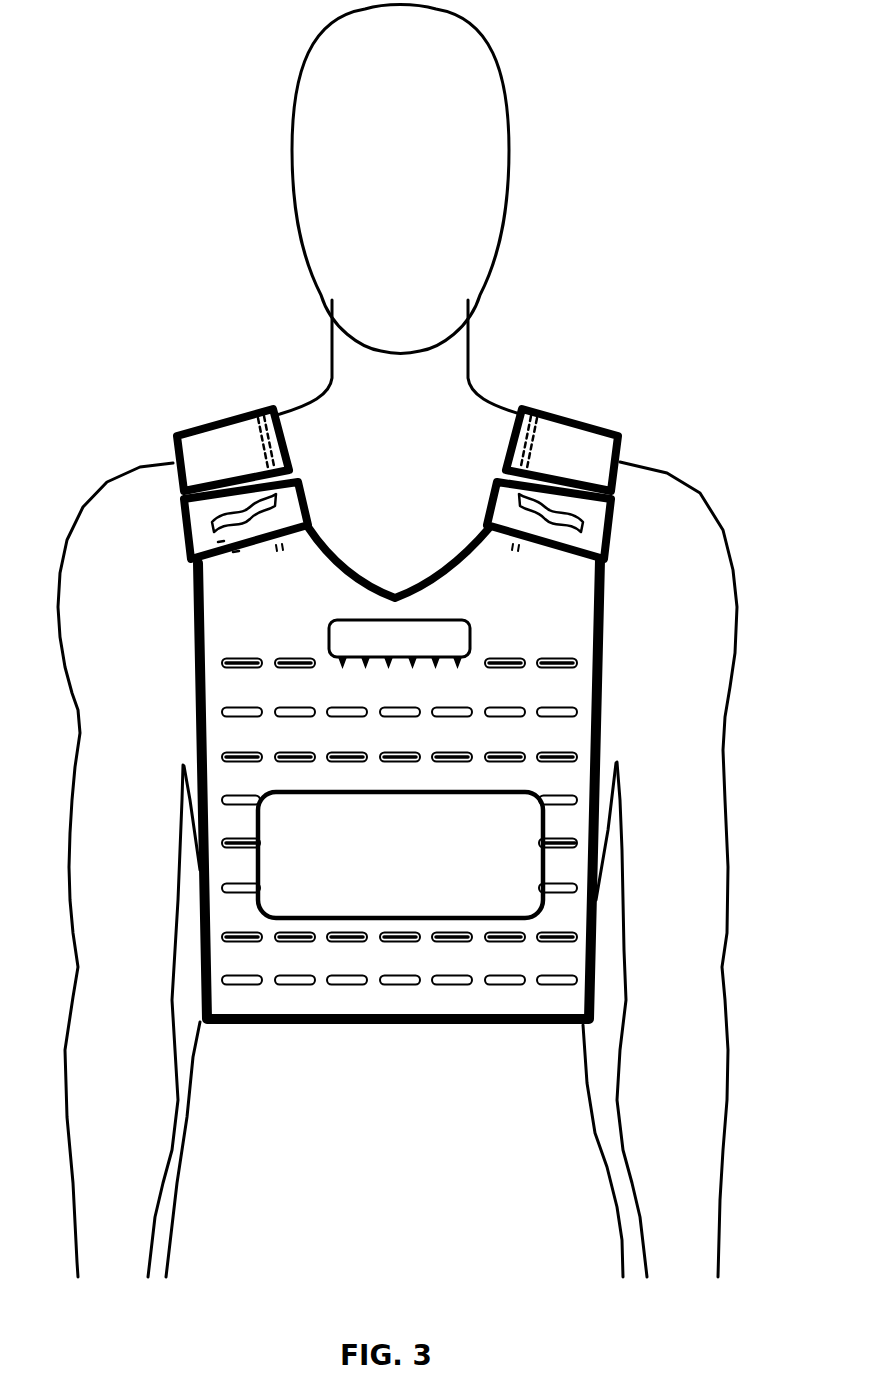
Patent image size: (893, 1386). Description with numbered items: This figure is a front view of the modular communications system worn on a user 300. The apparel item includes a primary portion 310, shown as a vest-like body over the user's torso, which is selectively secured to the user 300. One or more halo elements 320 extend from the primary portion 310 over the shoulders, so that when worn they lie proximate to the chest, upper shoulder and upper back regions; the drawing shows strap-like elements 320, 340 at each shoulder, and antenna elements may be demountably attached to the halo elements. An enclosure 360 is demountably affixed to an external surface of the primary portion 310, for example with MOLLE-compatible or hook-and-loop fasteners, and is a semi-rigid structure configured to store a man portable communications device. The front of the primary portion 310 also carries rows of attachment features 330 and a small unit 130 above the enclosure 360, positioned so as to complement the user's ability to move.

The user 300 is at (424, 167).
The primary portion 310 is at (203, 688).
The halo element 320 is at (617, 434).
The left shoulder strap 340 is at (262, 445).
The attachment slot 330 is at (486, 660).
The electronic control unit 130 is at (418, 654).
The enclosure 360 is at (416, 867).